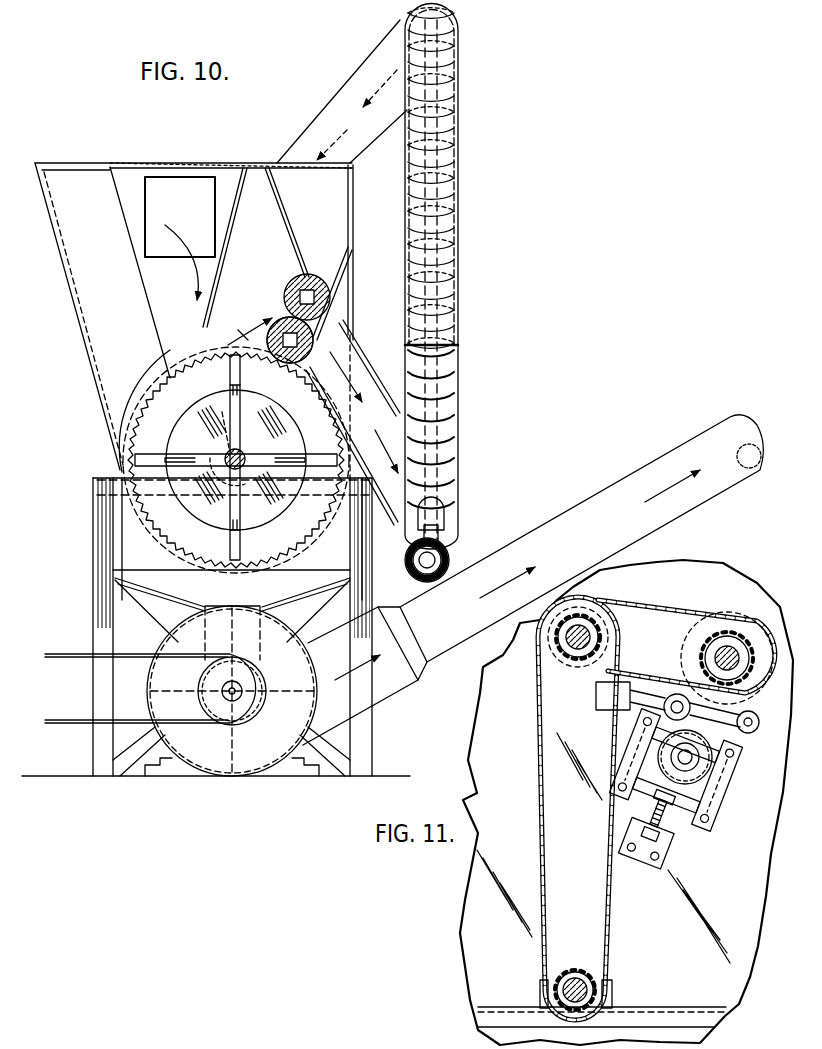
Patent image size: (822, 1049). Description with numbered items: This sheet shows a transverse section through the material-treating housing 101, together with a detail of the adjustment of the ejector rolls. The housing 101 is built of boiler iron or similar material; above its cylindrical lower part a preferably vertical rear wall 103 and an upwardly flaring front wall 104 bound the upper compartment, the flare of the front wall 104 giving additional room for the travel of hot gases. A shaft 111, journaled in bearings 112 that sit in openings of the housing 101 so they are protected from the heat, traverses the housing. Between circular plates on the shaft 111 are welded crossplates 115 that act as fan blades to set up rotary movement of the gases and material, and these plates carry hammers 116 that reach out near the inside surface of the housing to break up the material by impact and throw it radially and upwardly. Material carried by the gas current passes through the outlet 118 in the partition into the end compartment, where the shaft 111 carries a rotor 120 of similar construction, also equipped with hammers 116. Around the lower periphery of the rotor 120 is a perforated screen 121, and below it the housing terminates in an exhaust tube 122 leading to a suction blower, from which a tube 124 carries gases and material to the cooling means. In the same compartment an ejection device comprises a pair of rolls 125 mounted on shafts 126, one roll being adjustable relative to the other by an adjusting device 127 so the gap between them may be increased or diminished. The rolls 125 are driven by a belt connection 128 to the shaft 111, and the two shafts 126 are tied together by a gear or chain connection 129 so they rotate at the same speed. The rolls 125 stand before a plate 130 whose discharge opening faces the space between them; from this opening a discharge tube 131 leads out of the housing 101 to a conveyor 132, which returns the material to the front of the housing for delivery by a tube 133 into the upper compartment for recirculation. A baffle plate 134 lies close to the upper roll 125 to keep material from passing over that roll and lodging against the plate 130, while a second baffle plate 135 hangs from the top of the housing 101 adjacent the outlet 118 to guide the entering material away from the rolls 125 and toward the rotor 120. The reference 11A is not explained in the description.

In FIG. 10, the housing 101 is at (185, 164).
In FIG. 10, the rear wall 103 is at (355, 242).
In FIG. 10, the front wall 104 is at (70, 275).
In FIG. 10, the shaft 111 is at (246, 452).
In FIG. 11, the shaft 111 is at (567, 1003).
In FIG. 10, the bearings 112 is at (222, 422).
In FIG. 11, the bearings 112 is at (612, 1000).
In FIG. 10, the crossplates 115 is at (240, 420).
In FIG. 10, the hammers 116 is at (230, 370).
In FIG. 10, the outlet 118 is at (146, 208).
In FIG. 10, the rotor 11A is at (290, 425).
In FIG. 10, the rotor 120 is at (200, 512).
In FIG. 10, the perforated screen 121 is at (280, 573).
In FIG. 10, the exhaust tube 122 is at (258, 640).
In FIG. 10, the tube 124 is at (590, 503).
In FIG. 10, the rolls 125 is at (300, 285).
In FIG. 11, the rolls 125 is at (775, 620).
In FIG. 10, the shafts 126 is at (305, 308).
In FIG. 11, the shafts 126 is at (730, 650).
In FIG. 11, the adjusting device 127 is at (664, 832).
In FIG. 11, the belt connection 128 is at (608, 908).
In FIG. 11, the gear or chain connection 129 is at (675, 612).
In FIG. 10, the plate 130 is at (353, 291).
In FIG. 10, the discharge tube 131 is at (372, 365).
In FIG. 10, the conveyor 132 is at (462, 408).
In FIG. 10, the tube 133 is at (345, 86).
In FIG. 10, the baffle plate 134 is at (292, 236).
In FIG. 10, the baffle plate 135 is at (226, 260).